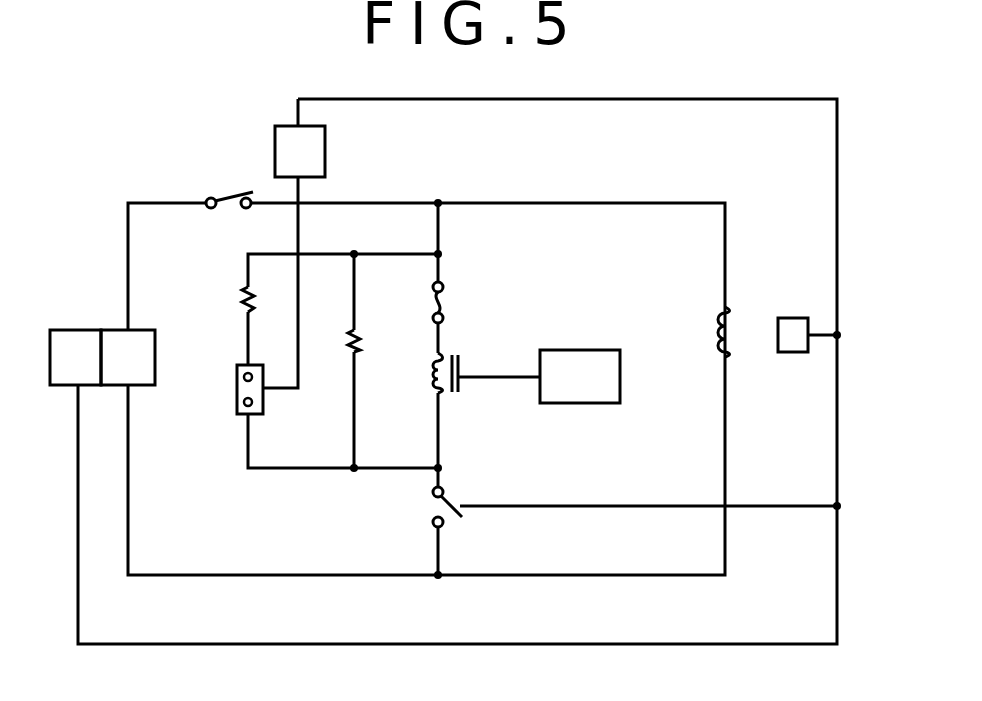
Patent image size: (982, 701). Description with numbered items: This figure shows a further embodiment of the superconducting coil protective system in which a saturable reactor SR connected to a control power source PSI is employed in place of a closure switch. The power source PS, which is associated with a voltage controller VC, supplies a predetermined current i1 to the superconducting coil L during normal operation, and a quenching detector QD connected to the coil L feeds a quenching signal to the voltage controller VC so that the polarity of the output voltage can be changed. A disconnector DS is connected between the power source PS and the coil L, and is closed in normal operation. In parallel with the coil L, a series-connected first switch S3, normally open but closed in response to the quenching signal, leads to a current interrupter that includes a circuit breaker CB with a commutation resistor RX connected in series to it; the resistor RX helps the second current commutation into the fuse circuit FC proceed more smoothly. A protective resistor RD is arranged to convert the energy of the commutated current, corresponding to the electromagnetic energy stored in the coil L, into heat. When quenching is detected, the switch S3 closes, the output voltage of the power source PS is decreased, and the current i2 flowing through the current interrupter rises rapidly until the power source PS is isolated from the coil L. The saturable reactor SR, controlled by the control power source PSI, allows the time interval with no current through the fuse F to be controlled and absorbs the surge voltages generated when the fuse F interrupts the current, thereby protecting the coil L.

The disconnector DS is at (229, 217).
The commutation resistor RX is at (220, 300).
The circuit breaker CB is at (224, 389).
The protective resistor RD is at (378, 342).
The fuse F is at (450, 302).
The saturable reactor SR is at (420, 374).
The fuse circuit FC is at (523, 343).
The control power source PSI is at (539, 376).
The superconducting coil L is at (738, 332).
The quenching detector QD is at (801, 316).
The voltage controller VC is at (75, 357).
The power source PS is at (128, 357).
The first switch S3 is at (466, 500).
The current through the superconducting coil i1 is at (718, 178).
The current through the current interrupter i2 is at (463, 538).